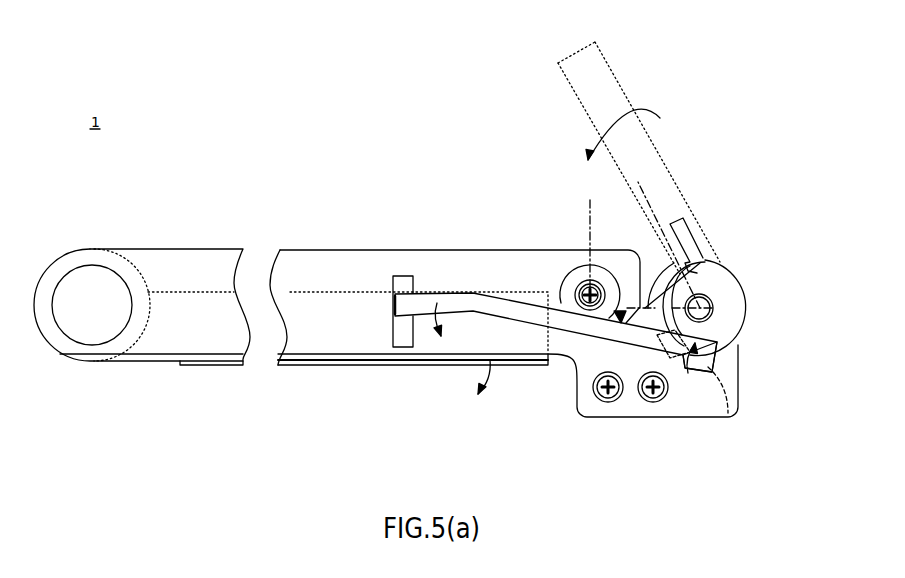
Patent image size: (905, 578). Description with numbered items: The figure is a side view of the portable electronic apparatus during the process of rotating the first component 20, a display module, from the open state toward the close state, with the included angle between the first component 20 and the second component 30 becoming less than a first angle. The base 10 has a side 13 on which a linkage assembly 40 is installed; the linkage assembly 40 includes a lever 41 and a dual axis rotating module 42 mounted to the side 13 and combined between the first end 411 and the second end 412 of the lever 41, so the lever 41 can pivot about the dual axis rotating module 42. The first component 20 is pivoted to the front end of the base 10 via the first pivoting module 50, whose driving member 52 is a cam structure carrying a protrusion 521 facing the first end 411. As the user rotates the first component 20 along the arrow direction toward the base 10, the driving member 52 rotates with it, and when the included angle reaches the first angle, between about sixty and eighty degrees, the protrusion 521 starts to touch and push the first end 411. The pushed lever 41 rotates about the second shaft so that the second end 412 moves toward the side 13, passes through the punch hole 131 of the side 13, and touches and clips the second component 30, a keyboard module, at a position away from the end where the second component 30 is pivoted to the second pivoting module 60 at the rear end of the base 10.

The base 10 is at (200, 240).
The side 13 is at (340, 260).
The punch hole 131 is at (405, 275).
The first component 20 is at (680, 178).
The second component 30 is at (157, 372).
The linkage assembly 40 is at (592, 343).
The lever 41 is at (480, 303).
The first end 411 is at (704, 373).
The second end 412 is at (394, 306).
The dual axis rotating module 42 is at (577, 292).
The first pivoting module 50 is at (730, 356).
The driving member 52 is at (740, 318).
The protrusion 521 is at (667, 338).
The second pivoting module 60 is at (56, 284).